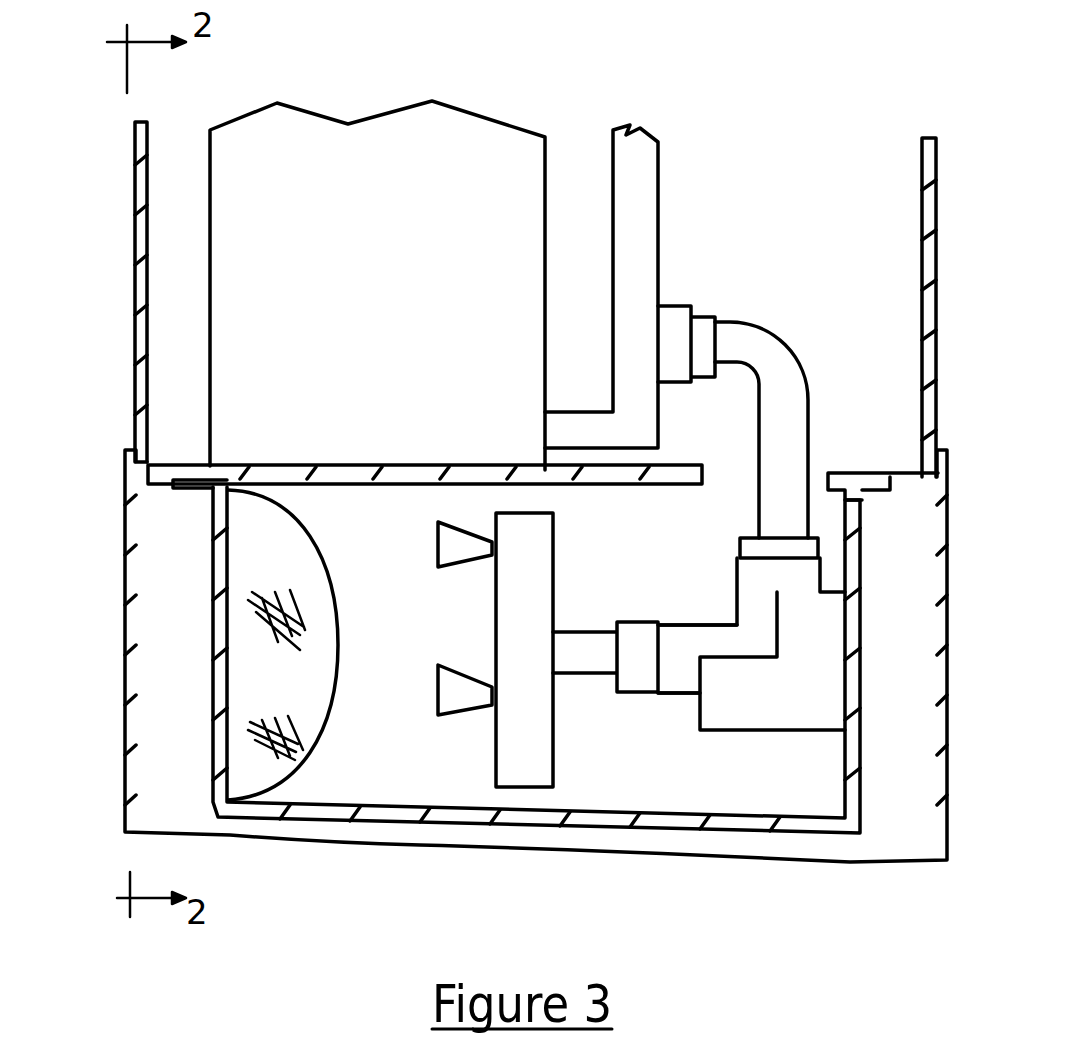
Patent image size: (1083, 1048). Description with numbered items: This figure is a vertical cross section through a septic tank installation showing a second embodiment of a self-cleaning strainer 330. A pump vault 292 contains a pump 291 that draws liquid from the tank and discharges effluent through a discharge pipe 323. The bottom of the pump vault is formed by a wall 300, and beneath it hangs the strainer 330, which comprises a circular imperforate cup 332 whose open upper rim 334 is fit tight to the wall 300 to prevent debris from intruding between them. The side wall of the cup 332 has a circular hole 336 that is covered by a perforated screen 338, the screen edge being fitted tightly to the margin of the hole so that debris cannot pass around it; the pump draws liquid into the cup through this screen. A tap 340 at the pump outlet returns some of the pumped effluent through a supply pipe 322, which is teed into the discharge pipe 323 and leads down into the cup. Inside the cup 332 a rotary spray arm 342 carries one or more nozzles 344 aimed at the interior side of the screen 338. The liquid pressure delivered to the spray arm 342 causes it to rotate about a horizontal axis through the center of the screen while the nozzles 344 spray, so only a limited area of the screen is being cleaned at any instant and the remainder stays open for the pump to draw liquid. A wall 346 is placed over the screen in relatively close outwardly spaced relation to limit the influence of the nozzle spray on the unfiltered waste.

The pump 291 is at (316, 111).
The pump vault 292 is at (148, 136).
The wall 300 is at (162, 463).
The supply pipe 322 is at (796, 358).
The discharge pipe 323 is at (660, 166).
The strainer 330 is at (197, 837).
The circular imperforate cup 332 is at (434, 844).
The open upper rim 334 is at (183, 490).
The circular hole 336 is at (313, 537).
The perforated screen 338 is at (213, 722).
The tap 340 is at (717, 320).
The rotary spray arm 342 is at (538, 585).
The nozzles 344 is at (467, 565).
The wall 346 is at (167, 648).